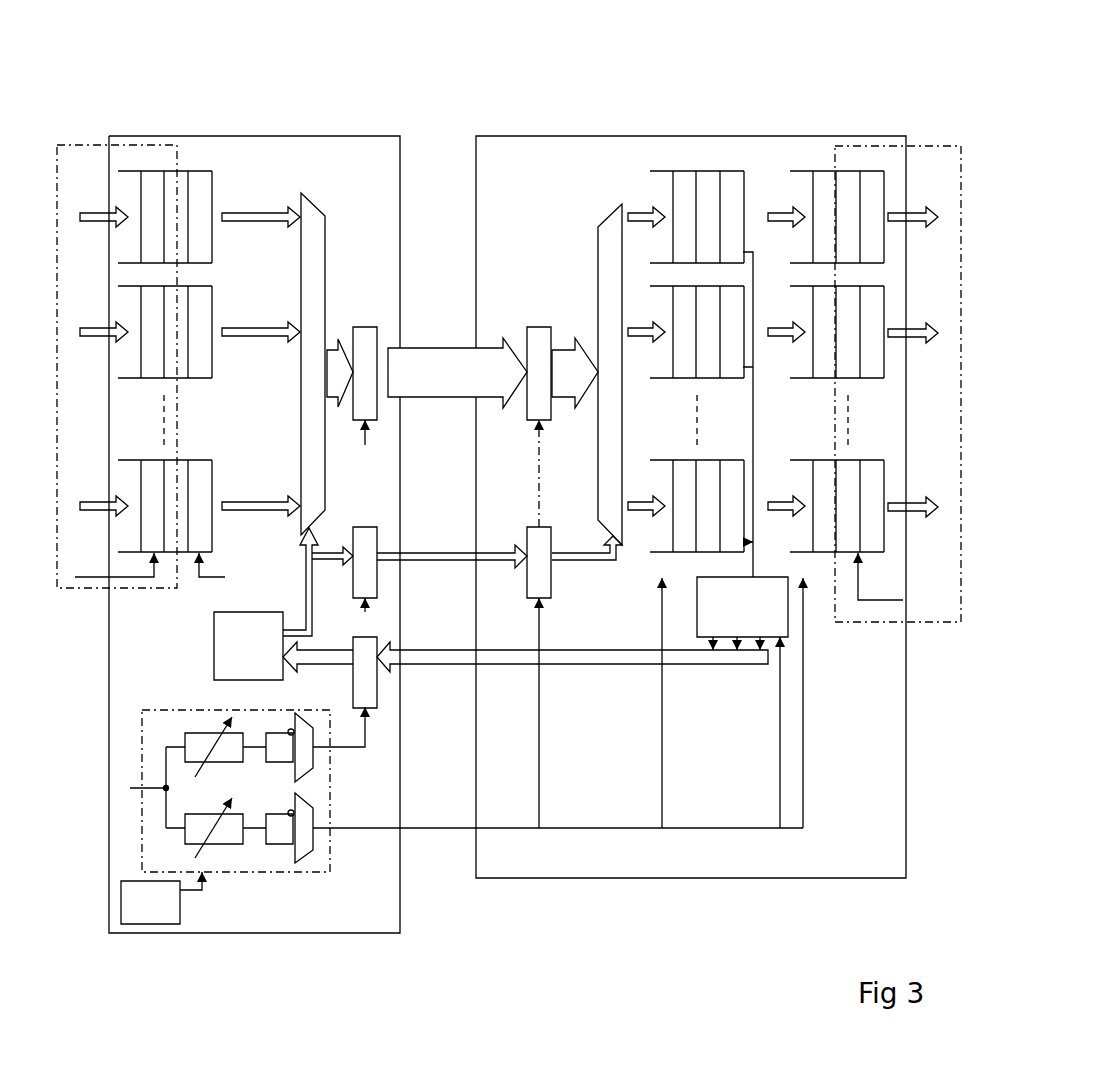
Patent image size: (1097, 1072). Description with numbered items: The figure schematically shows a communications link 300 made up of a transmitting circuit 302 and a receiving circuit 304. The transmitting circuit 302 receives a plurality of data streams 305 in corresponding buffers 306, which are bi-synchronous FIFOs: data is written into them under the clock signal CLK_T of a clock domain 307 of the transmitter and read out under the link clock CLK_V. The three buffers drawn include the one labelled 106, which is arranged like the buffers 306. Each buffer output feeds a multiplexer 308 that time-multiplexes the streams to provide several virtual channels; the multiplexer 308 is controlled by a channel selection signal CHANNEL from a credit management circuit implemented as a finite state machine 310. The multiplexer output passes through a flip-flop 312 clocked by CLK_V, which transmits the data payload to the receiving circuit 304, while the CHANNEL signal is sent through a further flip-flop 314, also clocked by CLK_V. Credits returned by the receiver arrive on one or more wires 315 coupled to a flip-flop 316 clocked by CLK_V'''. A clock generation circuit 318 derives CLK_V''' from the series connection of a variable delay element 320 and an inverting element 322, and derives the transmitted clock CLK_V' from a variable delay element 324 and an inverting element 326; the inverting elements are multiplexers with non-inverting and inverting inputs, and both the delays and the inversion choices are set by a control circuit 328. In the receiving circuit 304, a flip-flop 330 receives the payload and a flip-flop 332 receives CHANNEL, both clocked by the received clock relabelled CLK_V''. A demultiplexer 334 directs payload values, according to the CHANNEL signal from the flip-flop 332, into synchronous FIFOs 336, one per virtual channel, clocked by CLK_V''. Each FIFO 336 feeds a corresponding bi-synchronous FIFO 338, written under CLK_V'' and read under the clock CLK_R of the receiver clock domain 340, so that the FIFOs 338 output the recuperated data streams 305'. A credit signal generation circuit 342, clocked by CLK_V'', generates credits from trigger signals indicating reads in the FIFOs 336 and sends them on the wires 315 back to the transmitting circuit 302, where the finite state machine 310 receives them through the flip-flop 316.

The communications link 300 is at (906, 97).
The transmitting circuit 302 is at (307, 143).
The receiving circuit 304 is at (577, 143).
The data streams 305 is at (96, 347).
The data streams 305' is at (923, 386).
The buffers 306 is at (205, 194).
The input FIFO buffer 106 is at (204, 472).
The clock domain 307 is at (180, 163).
The multiplexer 308 is at (316, 206).
The finite state machine 310 is at (222, 618).
The flip-flop 312 is at (361, 326).
The flip-flop 314 is at (361, 527).
The input wires 315 is at (406, 655).
The flip-flop 316 is at (353, 688).
The clock generation circuit 318 is at (457, 776).
The variable delay element 320 is at (203, 737).
The inverting element 322 is at (295, 722).
The variable delay element 324 is at (207, 817).
The inverting element 326 is at (295, 805).
The control circuit 328 is at (180, 916).
The flip-flop 330 is at (539, 328).
The flip-flop 332 is at (543, 532).
The demultiplexer 334 is at (610, 226).
The FIFOs 336 is at (686, 178).
The further FIFOs 338 is at (824, 177).
The clock domain 340 is at (958, 147).
The credit signal generation circuit 342 is at (704, 578).